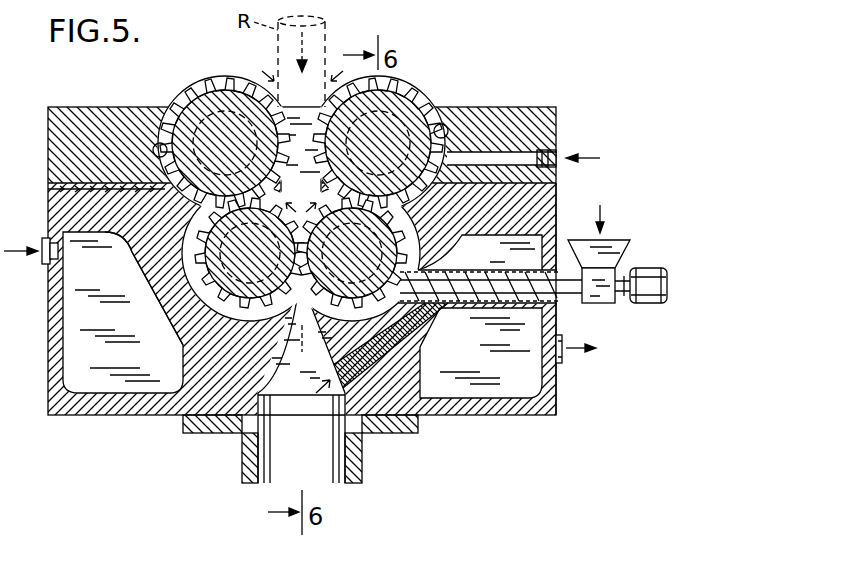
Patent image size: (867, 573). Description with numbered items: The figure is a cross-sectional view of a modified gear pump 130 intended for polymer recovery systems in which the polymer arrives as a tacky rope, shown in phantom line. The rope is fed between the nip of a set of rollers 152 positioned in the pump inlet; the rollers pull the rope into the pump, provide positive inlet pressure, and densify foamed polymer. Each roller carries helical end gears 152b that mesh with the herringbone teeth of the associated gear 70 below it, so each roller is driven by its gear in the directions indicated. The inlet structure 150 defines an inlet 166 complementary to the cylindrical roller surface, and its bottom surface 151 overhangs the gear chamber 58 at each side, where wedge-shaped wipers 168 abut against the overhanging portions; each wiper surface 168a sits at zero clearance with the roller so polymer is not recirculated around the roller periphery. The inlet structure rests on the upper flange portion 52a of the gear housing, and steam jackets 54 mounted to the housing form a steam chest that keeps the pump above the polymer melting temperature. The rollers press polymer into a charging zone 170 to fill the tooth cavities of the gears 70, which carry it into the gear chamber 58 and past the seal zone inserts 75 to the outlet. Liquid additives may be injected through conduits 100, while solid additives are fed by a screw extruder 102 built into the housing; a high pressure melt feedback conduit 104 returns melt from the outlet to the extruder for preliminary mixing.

The modified gear pump 130 is at (356, 238).
The inlet structure 150 is at (598, 82).
The upper flange portion 52a is at (548, 206).
The bottom surface 151 is at (162, 178).
The charging zone 170 is at (320, 191).
The gear chamber 58 is at (163, 305).
The wipers 168 is at (128, 250).
The wiper surface 168a is at (389, 144).
The conduits 100 is at (553, 152).
The high pressure melt feedback conduit 104 is at (362, 350).
The seal zone inserts 75 is at (267, 383).
The rollers 152 is at (314, 127).
The helical end gears 152b is at (197, 82).
The gears 70 is at (262, 262).
The inlet 166 is at (153, 149).
The steam jackets 54 is at (557, 322).
The screw extruder 102 is at (645, 258).